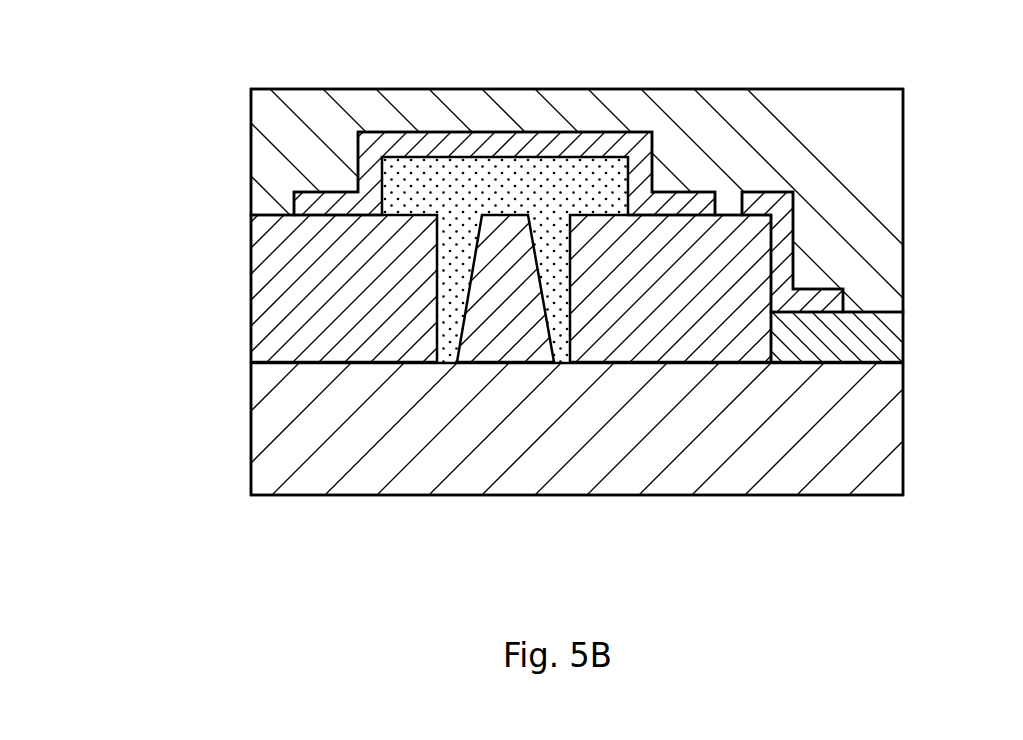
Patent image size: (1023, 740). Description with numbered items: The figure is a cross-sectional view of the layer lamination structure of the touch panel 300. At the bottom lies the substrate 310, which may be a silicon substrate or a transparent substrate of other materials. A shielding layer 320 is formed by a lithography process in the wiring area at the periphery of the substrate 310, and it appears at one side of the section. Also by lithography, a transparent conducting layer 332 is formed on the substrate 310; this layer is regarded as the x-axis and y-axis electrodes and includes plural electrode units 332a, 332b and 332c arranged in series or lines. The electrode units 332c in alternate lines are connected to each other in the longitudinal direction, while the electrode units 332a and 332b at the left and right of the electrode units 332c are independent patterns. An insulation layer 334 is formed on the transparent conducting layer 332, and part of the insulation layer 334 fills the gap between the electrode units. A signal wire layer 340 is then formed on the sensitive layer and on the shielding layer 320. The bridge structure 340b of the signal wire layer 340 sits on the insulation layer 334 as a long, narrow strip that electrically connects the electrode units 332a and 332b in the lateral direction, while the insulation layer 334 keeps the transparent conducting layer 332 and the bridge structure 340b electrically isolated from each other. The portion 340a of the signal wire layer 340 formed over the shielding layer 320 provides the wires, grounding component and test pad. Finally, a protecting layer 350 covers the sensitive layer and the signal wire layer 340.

The touch panel 300 is at (185, 102).
The substrate 310 is at (890, 433).
The shielding layer 320 is at (887, 338).
The transparent conducting layer 332 is at (549, 304).
The electrode unit 332a is at (273, 285).
The electrode unit 332b is at (729, 250).
The electrode unit 332c is at (507, 340).
The insulation layer 334 is at (457, 362).
The signal wire layer 340 is at (290, 203).
The signal wire layer portion 340a is at (797, 232).
The bridge structure 340b is at (436, 148).
The protecting layer 350 is at (842, 107).